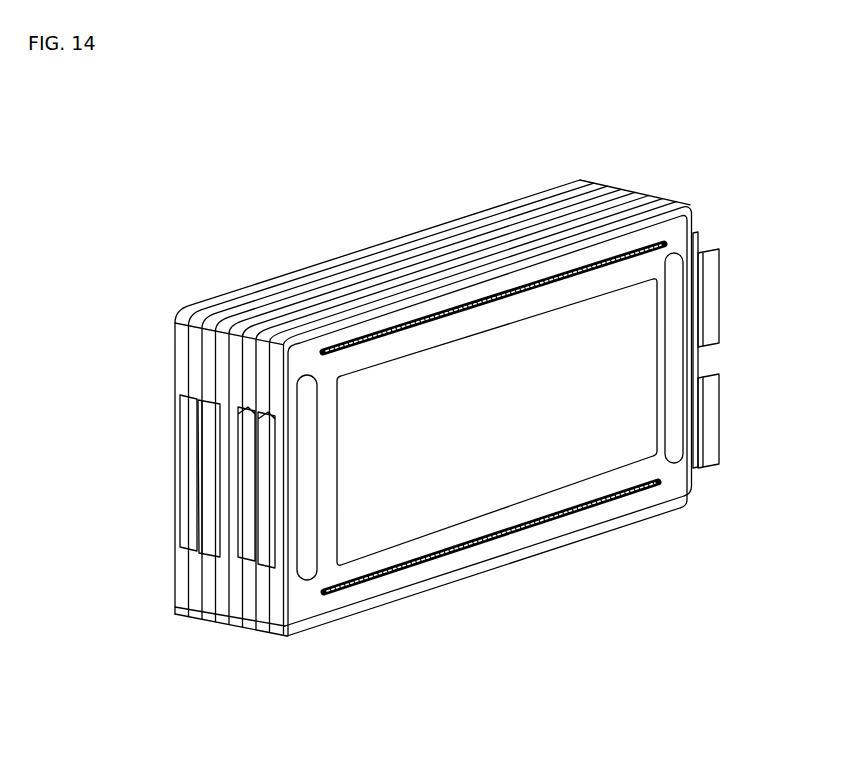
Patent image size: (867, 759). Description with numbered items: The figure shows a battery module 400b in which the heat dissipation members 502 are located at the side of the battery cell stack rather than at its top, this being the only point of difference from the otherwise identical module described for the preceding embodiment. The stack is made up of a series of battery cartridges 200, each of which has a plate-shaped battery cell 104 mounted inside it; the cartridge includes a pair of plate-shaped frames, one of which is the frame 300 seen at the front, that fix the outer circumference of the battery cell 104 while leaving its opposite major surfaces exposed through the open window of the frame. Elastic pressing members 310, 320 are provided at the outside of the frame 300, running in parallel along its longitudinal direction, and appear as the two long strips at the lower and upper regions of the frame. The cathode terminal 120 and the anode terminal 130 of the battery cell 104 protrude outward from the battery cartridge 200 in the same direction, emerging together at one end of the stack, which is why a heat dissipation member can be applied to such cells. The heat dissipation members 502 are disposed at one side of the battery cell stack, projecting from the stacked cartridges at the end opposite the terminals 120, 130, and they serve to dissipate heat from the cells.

The battery module 400b is at (88, 138).
The battery cartridge 200 is at (188, 297).
The plate-shaped frame 300 is at (312, 592).
The battery cell 104 is at (637, 440).
The elastic pressing member 320 is at (659, 243).
The elastic pressing member 310 is at (438, 557).
The anode terminal 130 is at (713, 307).
The cathode terminal 120 is at (716, 430).
The heat dissipation member 502 is at (175, 445).